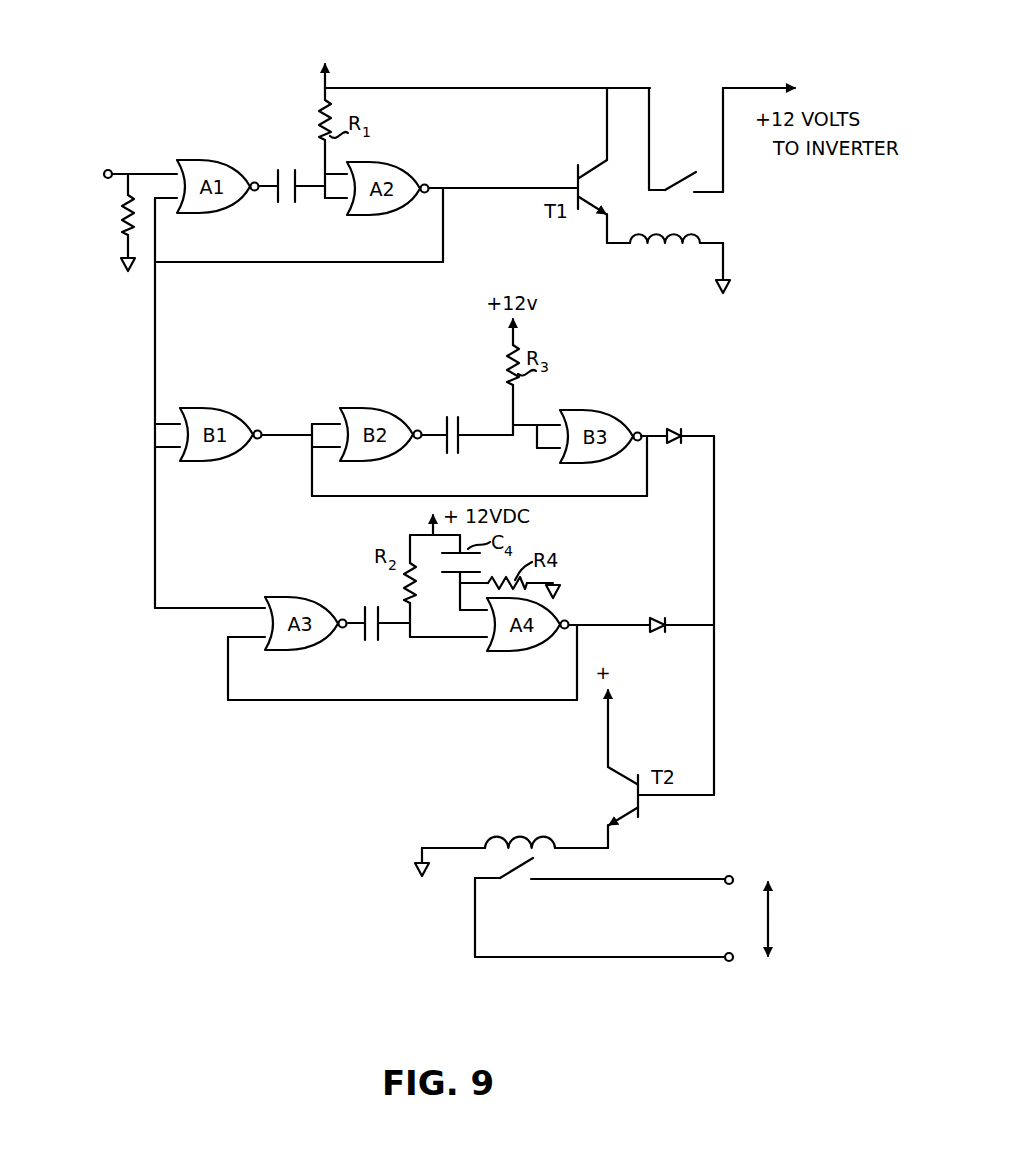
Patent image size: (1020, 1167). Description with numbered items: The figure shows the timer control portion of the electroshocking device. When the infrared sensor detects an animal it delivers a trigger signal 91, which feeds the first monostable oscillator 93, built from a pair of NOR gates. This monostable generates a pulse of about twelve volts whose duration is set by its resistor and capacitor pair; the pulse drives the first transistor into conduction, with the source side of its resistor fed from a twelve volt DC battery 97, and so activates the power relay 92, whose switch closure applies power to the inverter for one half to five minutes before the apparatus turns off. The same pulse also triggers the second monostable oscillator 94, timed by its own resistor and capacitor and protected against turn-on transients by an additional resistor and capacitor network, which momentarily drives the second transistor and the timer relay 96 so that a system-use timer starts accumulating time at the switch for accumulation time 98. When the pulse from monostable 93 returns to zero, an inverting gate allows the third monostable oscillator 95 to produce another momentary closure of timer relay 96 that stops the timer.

The trigger signal from IR detector 91 is at (44, 174).
The power relay 92 is at (668, 251).
The A1/A2 monostable oscillator 93 is at (278, 182).
The A3/A4 monostable oscillator 94 is at (362, 606).
The B2/B3 monostable oscillator 95 is at (441, 419).
The timer relay 96 is at (520, 836).
The 12 volt DC battery 97 is at (482, 48).
The switch for accumulation time 98 is at (770, 916).